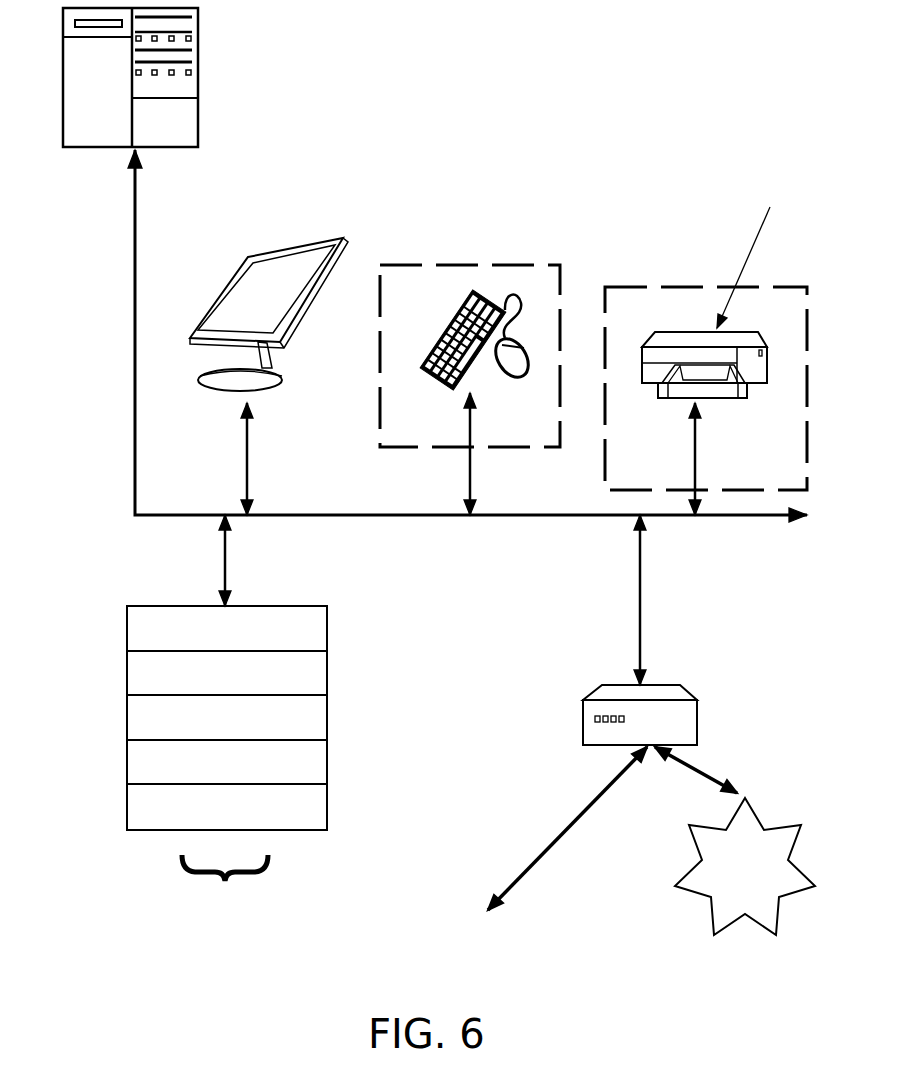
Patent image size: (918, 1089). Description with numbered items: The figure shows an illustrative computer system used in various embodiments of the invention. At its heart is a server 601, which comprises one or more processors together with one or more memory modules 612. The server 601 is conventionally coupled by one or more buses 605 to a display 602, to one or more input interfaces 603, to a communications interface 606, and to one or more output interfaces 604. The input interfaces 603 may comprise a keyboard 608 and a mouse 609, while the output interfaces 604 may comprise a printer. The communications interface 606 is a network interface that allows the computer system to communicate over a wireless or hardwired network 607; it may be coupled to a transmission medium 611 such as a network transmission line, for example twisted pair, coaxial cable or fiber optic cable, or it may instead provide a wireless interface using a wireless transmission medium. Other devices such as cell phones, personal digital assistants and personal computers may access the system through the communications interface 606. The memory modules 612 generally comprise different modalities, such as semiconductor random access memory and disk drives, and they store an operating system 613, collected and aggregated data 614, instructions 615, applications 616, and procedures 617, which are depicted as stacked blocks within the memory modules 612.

The server 601 is at (203, 85).
The display 602 is at (302, 232).
The input interfaces 603 is at (437, 260).
The output interfaces 604 is at (673, 280).
The buses 605 is at (440, 527).
The communications interface 606 is at (580, 713).
The wireless or hardwired network 607 is at (673, 885).
The keyboard 608 is at (478, 283).
The mouse 609 is at (530, 352).
The transmission medium 611 is at (585, 808).
The memory modules 612 is at (181, 730).
The operating system 613 is at (125, 628).
The collected and aggregated data 614 is at (125, 672).
The instructions 615 is at (125, 717).
The applications 616 is at (125, 762).
The procedures 617 is at (125, 808).